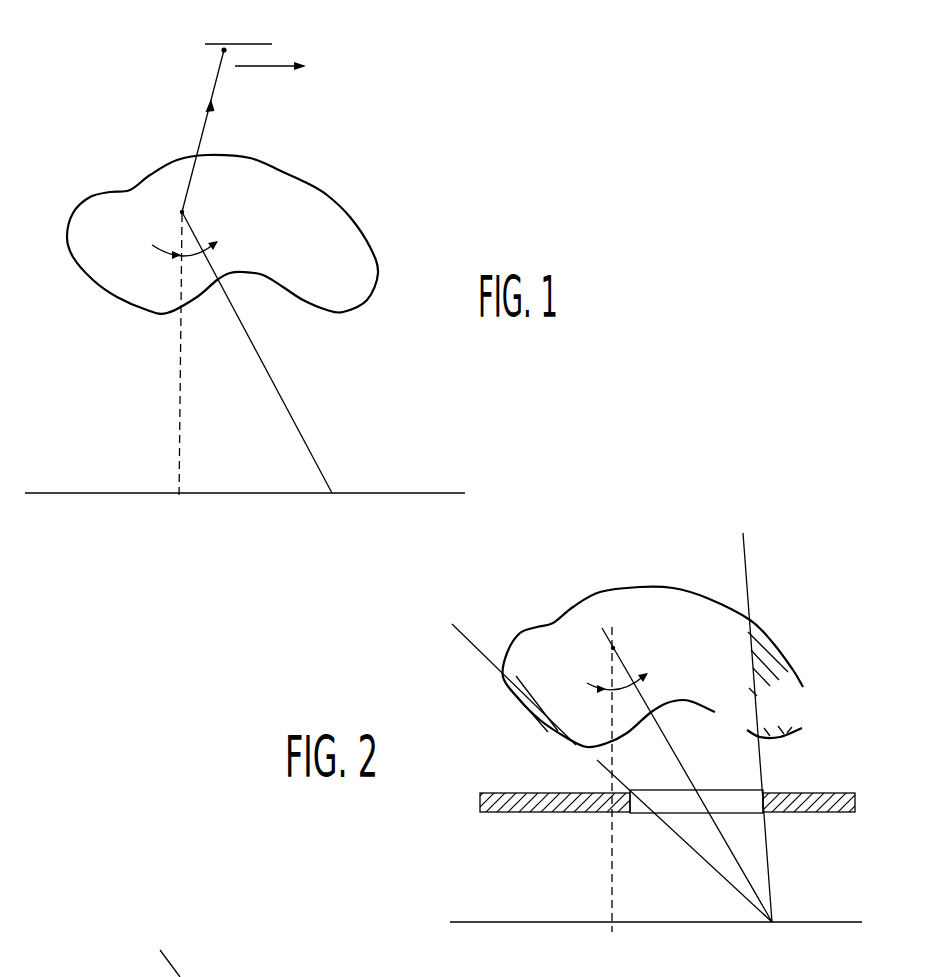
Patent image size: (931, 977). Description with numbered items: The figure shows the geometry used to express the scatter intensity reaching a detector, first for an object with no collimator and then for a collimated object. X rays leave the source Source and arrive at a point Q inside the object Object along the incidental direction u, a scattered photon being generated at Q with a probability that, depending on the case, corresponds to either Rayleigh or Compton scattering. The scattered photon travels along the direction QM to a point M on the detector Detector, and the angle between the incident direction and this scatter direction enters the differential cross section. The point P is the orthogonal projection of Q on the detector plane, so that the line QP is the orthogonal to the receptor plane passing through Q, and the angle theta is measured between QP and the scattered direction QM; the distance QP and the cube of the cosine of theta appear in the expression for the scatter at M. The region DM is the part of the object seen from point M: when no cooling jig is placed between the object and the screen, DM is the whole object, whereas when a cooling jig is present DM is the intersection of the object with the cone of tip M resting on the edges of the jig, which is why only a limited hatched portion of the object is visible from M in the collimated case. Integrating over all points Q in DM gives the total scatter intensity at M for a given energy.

In FIG. 1, the X-ray source Source is at (222, 106).
In FIG. 1, the incidental direction u(Q) u is at (269, 80).
In FIG. 1, the object Object is at (222, 234).
In FIG. 2, the object Object is at (657, 667).
In FIG. 1, the point Q is at (243, 343).
In FIG. 2, the point Q is at (687, 779).
In FIG. 1, the angle θ theta is at (183, 260).
In FIG. 2, the angle θ theta is at (612, 694).
In FIG. 1, the detector Detector is at (270, 474).
In FIG. 2, the detector Detector is at (627, 903).
In FIG. 1, the point P is at (164, 509).
In FIG. 2, the point P is at (593, 938).
In FIG. 1, the point M is at (338, 509).
In FIG. 2, the point M is at (788, 938).
In FIG. 2, the part of the object seen from point M (D_M) DM is at (745, 727).